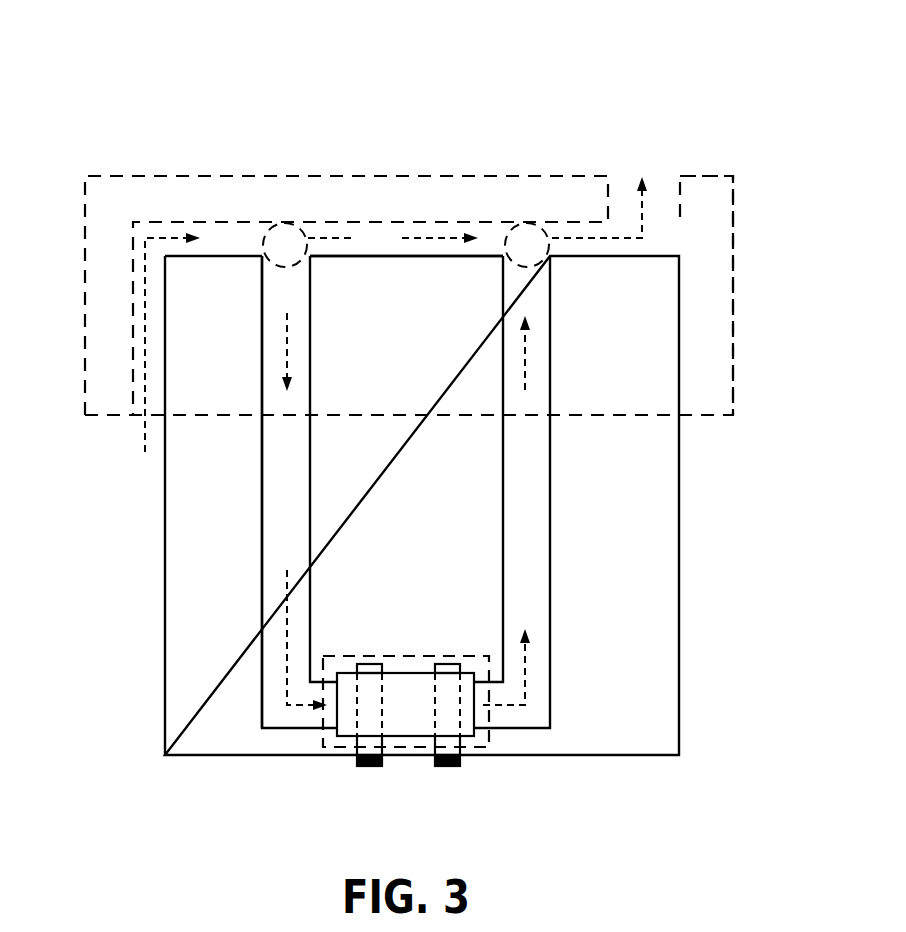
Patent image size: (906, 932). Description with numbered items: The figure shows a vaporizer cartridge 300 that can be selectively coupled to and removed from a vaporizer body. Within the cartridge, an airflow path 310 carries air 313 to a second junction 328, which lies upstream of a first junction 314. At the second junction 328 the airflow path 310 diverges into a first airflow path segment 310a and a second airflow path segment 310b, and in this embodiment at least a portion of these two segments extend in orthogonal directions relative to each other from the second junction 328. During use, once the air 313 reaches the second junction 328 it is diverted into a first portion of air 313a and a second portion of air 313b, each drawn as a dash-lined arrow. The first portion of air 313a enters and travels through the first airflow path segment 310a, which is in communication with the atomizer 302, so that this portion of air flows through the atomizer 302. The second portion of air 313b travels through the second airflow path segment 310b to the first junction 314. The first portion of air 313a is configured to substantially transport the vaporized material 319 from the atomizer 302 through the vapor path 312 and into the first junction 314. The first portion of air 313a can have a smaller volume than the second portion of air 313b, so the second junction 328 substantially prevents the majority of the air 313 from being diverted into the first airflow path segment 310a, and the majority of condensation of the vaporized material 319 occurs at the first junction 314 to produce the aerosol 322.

The vaporizer cartridge 300 is at (716, 66).
The atomizer 302 is at (323, 750).
The airflow path 310 is at (238, 249).
The first airflow path segment 310a is at (306, 529).
The second airflow path segment 310b is at (401, 249).
The vapor path 312 is at (545, 539).
The air 313 is at (145, 315).
The first portion of air 313a is at (291, 354).
The second portion of air 313b is at (425, 236).
The first junction 314 is at (549, 252).
The vaporized material 319 is at (511, 351).
The aerosol 322 is at (643, 222).
The second junction 328 is at (258, 234).